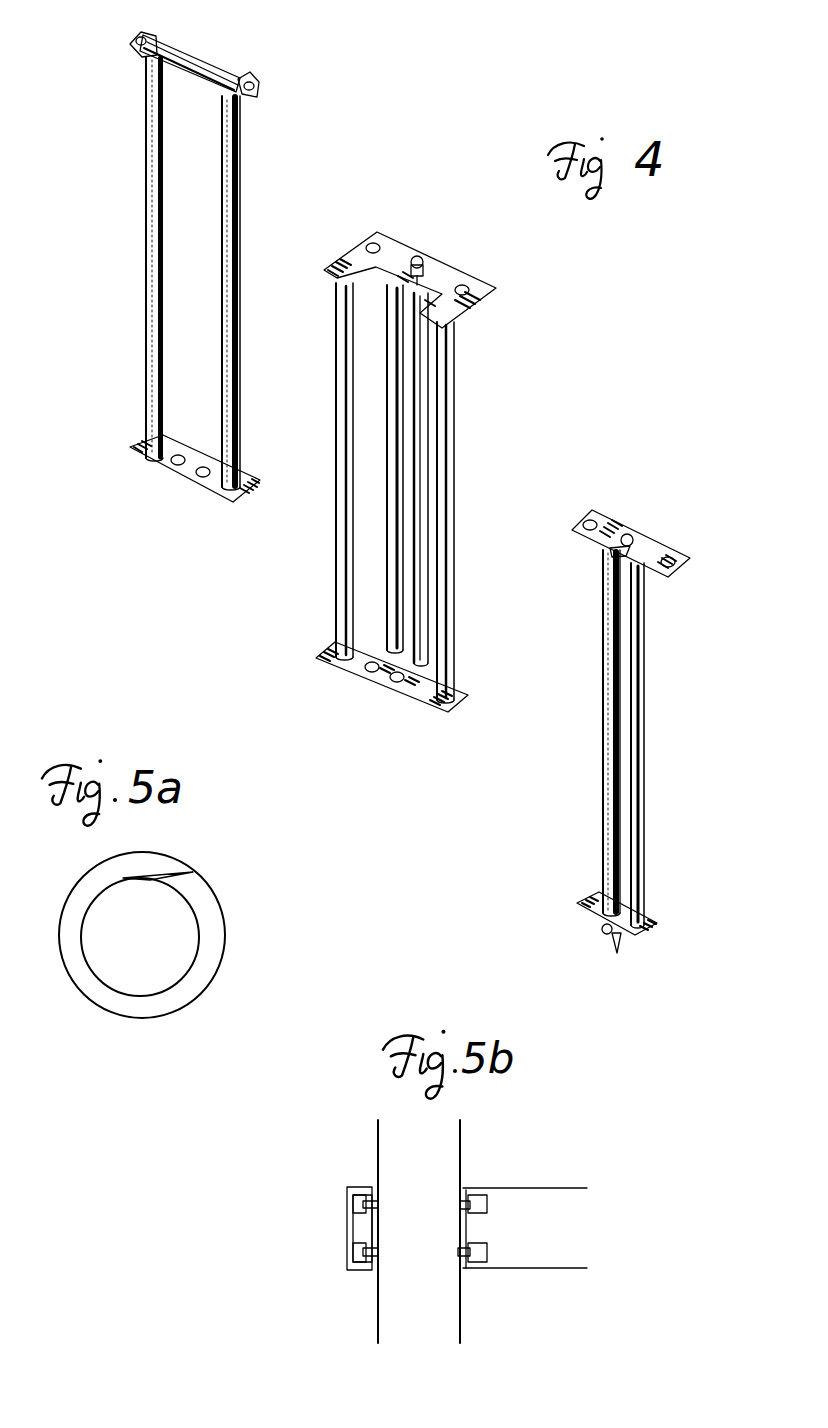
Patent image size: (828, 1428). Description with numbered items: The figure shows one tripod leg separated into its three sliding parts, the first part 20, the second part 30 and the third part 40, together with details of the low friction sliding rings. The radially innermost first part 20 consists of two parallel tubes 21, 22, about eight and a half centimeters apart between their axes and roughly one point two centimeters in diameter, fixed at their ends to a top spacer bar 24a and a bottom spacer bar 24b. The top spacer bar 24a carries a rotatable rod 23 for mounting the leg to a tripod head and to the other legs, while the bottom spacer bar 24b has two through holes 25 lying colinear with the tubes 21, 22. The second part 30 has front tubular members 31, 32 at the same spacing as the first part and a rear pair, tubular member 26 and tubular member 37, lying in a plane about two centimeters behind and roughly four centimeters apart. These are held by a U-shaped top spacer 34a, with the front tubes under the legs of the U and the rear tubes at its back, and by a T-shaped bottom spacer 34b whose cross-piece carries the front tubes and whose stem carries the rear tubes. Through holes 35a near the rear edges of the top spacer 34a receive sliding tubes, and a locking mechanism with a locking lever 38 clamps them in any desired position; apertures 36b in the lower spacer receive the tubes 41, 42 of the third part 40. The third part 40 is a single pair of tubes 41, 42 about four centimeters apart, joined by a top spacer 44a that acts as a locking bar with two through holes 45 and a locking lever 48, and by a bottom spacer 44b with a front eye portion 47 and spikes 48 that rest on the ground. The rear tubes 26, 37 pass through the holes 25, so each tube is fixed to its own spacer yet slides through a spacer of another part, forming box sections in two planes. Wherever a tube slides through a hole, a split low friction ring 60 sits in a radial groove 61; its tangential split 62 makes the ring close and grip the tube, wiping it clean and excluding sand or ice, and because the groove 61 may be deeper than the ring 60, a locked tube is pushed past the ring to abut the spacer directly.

In FIG. 4, the first part 20 is at (124, 34).
In FIG. 4, the tube 21 is at (145, 153).
In FIG. 4, the tube 22 is at (238, 193).
In FIG. 4, the rotatable rod 23 is at (143, 52).
In FIG. 4, the top spacer bar 24a is at (200, 56).
In FIG. 4, the bottom spacer bar 24b is at (147, 460).
In FIG. 4, the through holes 25 is at (203, 478).
In FIG. 4, the second part 30 is at (358, 210).
In FIG. 4, the front tubular member 31 is at (336, 392).
In FIG. 4, the tube 26 is at (388, 412).
In FIG. 4, the rear tubular member 37 is at (415, 517).
In FIG. 4, the front tubular member 32 is at (455, 428).
In FIG. 4, the top spacer 34a is at (487, 284).
In FIG. 4, the bottom spacer 34b is at (425, 708).
In FIG. 4, the through holes 35a is at (375, 243).
In FIG. 4, the apertures 36b is at (394, 684).
In FIG. 4, the locking lever 38 is at (422, 258).
In FIG. 4, the third part 40 is at (582, 496).
In FIG. 4, the tube 41 is at (602, 765).
In FIG. 4, the tube 42 is at (645, 777).
In FIG. 4, the top spacer 44a is at (662, 548).
In FIG. 4, the bottom spacer 44b is at (653, 922).
In FIG. 4, the through holes 45 is at (572, 530).
In FIG. 4, the front eye portion 47 is at (603, 930).
In FIG. 4, the locking lever 48 is at (610, 553).
In FIG. 5A, the low friction ring 60 is at (152, 1013).
In FIG. 5A, the split 62 is at (187, 870).
In FIG. 5B, the radial groove 61 is at (477, 1213).